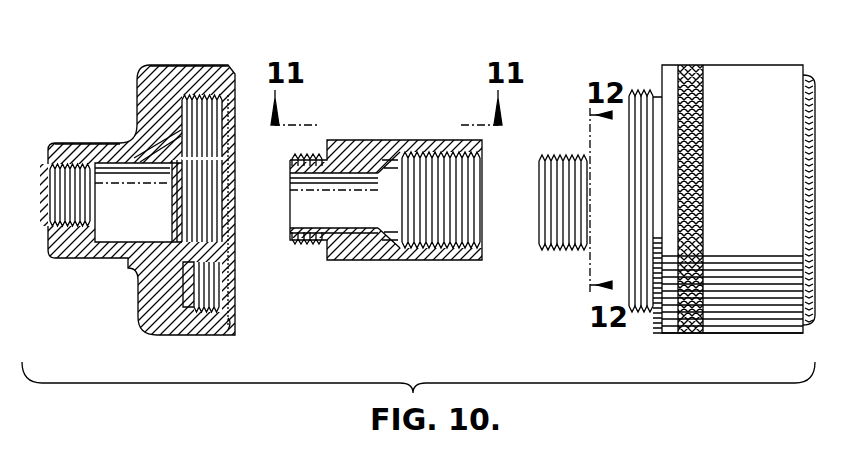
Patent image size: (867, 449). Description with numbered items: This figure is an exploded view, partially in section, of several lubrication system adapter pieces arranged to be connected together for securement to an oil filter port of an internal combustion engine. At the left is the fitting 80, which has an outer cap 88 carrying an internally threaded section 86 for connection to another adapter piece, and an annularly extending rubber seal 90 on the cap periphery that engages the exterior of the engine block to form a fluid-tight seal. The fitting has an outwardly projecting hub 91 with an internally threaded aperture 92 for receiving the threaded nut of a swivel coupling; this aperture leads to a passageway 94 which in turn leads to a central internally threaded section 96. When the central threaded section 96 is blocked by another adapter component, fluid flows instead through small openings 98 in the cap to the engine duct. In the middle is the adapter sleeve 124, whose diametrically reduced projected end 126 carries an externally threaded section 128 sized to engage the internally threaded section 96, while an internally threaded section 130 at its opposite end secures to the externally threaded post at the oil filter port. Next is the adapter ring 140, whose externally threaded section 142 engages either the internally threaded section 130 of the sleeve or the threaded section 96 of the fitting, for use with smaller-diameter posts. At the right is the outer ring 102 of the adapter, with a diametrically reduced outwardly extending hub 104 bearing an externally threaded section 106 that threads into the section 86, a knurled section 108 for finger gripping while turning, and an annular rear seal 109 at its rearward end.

The fitting 80 is at (133, 70).
The outer cap 88 is at (168, 64).
The outwardly projecting hub 91 is at (78, 143).
The small openings 98 is at (140, 128).
The internally threaded aperture 92 is at (55, 196).
The passageway 94 is at (128, 246).
The internally threaded section 96 is at (200, 204).
The internally threaded section 86 is at (217, 282).
The rubber seal 90 is at (232, 322).
The adapter sleeve 124 is at (407, 138).
The externally threaded section 128 is at (297, 245).
The diametrically reduced projected end 126 is at (327, 244).
The internally threaded section 130 is at (440, 258).
The externally threaded section 142 is at (538, 207).
The adapter ring 140 is at (560, 250).
The outwardly extending hub 104 is at (630, 94).
The externally threaded section 106 is at (645, 92).
The knurled section 108 is at (693, 65).
The outer ring 102 is at (745, 65).
The annular rear seal 109 is at (812, 77).